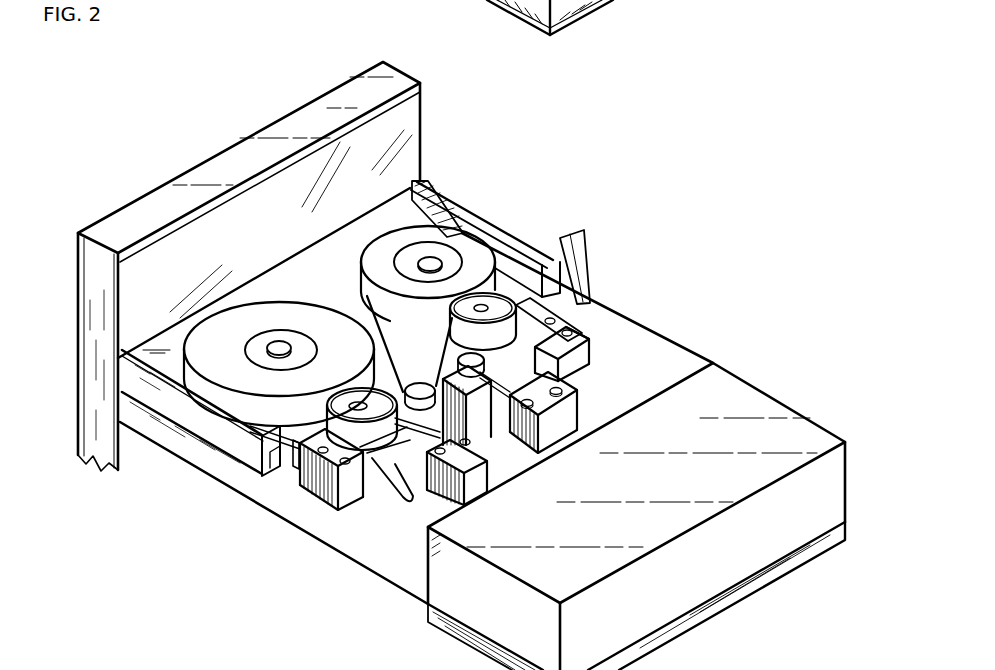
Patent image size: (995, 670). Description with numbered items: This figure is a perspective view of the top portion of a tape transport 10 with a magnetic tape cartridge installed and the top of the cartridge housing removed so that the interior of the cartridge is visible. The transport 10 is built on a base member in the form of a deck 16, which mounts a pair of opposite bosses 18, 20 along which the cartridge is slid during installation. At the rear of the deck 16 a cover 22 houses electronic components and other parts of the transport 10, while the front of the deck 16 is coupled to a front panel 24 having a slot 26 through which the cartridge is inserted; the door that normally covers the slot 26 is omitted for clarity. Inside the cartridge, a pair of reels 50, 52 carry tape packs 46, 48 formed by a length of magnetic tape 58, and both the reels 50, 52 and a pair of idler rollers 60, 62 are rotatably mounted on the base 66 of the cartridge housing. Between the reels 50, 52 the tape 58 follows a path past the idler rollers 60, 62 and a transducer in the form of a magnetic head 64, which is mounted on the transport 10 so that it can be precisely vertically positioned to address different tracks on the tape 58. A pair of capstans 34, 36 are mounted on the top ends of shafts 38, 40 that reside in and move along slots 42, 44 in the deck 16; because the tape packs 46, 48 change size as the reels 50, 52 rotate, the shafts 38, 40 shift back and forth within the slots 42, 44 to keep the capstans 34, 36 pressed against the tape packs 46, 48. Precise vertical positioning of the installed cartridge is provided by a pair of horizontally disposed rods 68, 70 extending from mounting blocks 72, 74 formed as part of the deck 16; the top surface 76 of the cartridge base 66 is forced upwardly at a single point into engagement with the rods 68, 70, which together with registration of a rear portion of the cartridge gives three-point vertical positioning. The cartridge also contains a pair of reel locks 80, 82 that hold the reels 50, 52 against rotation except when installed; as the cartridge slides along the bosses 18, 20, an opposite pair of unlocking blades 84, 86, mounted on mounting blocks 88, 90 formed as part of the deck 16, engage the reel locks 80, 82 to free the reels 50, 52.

The transport 10 is at (676, 305).
The deck 16 is at (350, 565).
The boss 18 is at (224, 437).
The boss 20 is at (470, 222).
The cover 22 is at (846, 466).
The front panel 24 is at (215, 222).
The slot 26 is at (427, 183).
The capstan 34 is at (318, 468).
The capstan 36 is at (554, 262).
The shaft 38 is at (358, 402).
The shaft 40 is at (482, 305).
The slot 42 is at (390, 490).
The slot 44 is at (583, 375).
The tape pack 46 is at (280, 314).
The tape pack 48 is at (368, 258).
The reel 50 is at (253, 344).
The reel 52 is at (404, 258).
The magnetic tape 58 is at (417, 322).
The idler roller 60 is at (422, 388).
The idler roller 62 is at (450, 364).
The magnetic head 64 is at (482, 452).
The base 66 is at (440, 193).
The rod 68 is at (410, 450).
The rod 70 is at (577, 335).
The mounting block 72 is at (421, 488).
The mounting block 74 is at (563, 412).
The top surface 76 is at (537, 322).
The reel lock 80 is at (255, 468).
The reel lock 82 is at (507, 330).
The unlocking blade 84 is at (306, 457).
The unlocking blade 86 is at (582, 260).
The mounting block 88 is at (340, 494).
The mounting block 90 is at (588, 360).